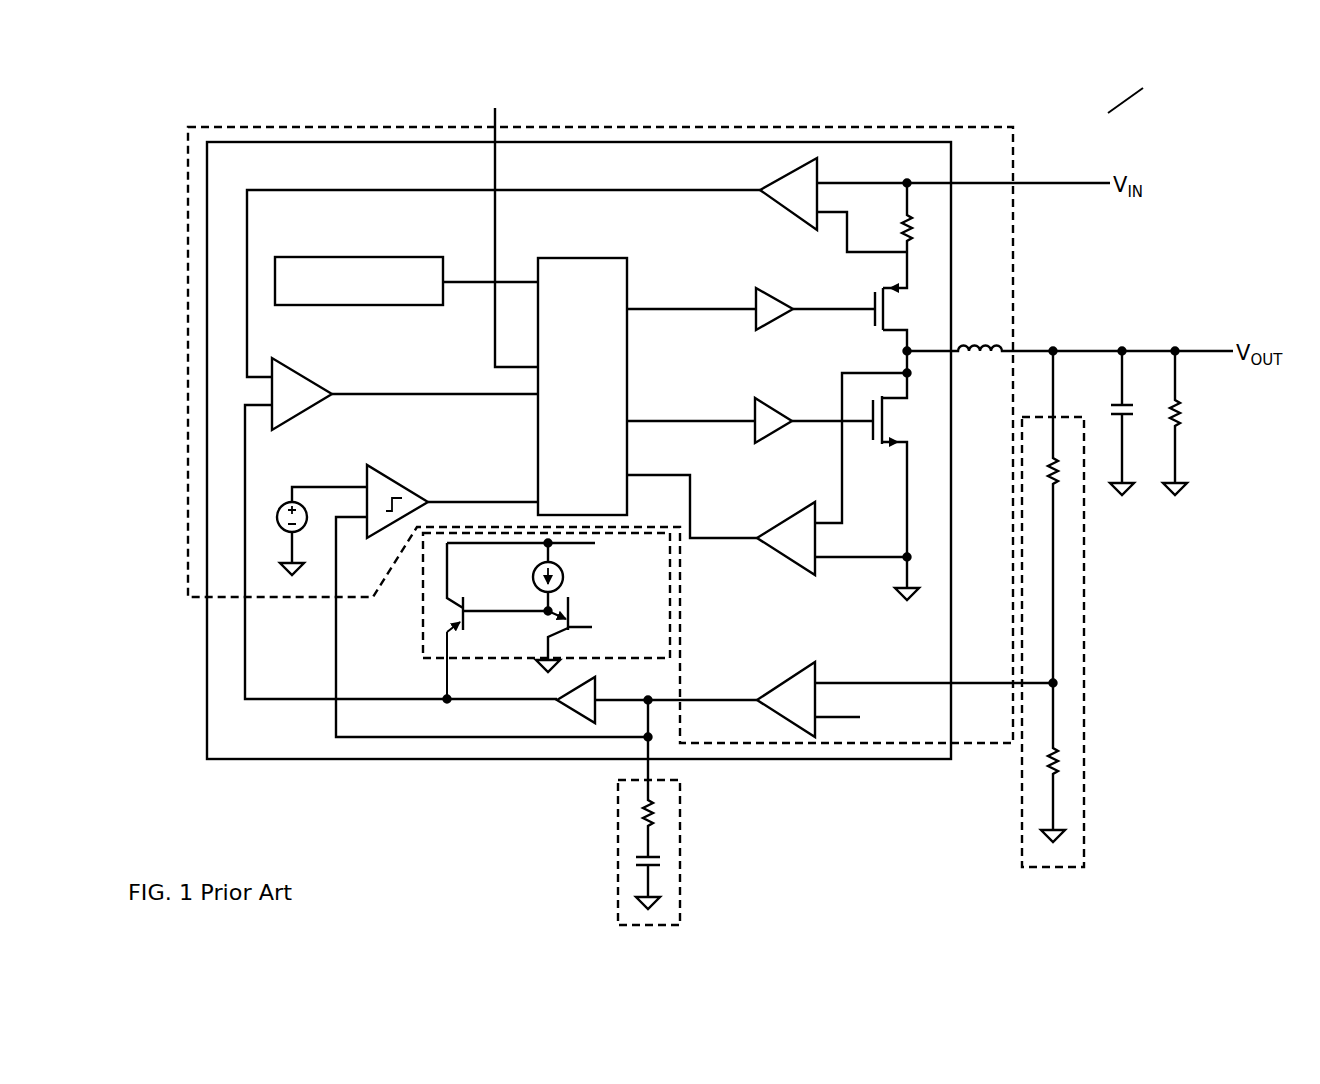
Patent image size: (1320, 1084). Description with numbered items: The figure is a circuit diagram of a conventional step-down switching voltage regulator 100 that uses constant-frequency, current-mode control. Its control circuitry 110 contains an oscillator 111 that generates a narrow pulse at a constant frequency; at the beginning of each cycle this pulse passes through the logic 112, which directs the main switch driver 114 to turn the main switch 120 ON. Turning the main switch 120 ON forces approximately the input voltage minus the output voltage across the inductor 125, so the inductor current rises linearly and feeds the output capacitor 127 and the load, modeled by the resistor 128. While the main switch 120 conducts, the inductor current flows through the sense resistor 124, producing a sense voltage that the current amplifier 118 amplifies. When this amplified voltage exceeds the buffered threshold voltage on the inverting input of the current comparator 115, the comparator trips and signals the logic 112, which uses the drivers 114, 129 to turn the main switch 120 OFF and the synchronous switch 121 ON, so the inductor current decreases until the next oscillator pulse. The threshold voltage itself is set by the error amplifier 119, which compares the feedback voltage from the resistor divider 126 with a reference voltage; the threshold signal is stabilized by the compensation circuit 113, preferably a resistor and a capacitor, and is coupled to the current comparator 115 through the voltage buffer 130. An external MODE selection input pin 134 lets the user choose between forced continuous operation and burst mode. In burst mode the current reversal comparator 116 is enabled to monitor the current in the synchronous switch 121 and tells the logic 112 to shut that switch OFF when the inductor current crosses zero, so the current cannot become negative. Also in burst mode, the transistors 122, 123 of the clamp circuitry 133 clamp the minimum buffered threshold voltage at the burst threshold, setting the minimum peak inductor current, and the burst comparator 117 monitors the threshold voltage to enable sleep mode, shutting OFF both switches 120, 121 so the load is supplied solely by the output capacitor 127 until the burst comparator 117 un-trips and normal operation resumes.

The voltage regulator 100 is at (1112, 110).
The control circuitry 110 is at (838, 125).
The oscillator 111 is at (350, 258).
The logic 112 is at (595, 417).
The compensation circuit 113 is at (683, 855).
The main switch driver 114 is at (788, 300).
The current comparator 115 is at (318, 412).
The current reversal comparator 116 is at (787, 515).
The burst comparator 117 is at (365, 477).
The current amplifier 118 is at (780, 173).
The error amplifier 119 is at (780, 690).
The main switch 120 is at (908, 311).
The synchronous switch 121 is at (900, 418).
The transistor 122 is at (545, 630).
The transistor 123 is at (440, 613).
The sense resistor 124 is at (922, 228).
The inductor 125 is at (994, 342).
The resistor divider 126 is at (1087, 612).
The capacitor 127 is at (1115, 403).
The resistor 128 is at (1188, 420).
The switch driver 129 is at (780, 407).
The voltage buffer 130 is at (580, 715).
The clamp circuitry 133 is at (422, 652).
The MODE selection input pin 134 is at (495, 225).